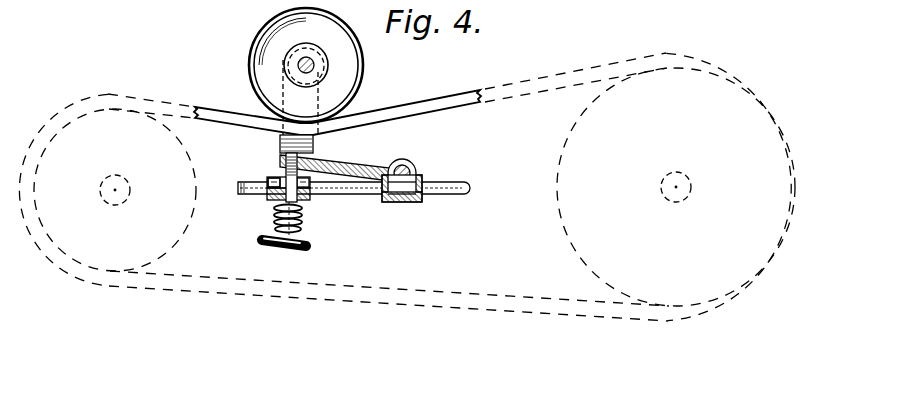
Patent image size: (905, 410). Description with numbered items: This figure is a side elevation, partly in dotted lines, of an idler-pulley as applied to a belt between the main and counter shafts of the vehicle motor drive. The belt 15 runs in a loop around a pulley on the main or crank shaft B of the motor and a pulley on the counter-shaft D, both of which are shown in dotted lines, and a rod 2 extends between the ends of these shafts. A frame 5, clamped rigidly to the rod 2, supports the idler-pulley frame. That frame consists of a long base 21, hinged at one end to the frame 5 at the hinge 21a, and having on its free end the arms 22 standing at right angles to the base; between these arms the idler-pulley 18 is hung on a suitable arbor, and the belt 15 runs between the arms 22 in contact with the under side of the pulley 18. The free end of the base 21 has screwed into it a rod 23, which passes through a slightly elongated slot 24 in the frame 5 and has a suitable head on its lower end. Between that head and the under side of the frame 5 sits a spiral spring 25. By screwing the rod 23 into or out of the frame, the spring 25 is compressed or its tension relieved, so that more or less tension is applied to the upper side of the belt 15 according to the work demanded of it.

The rod 2 is at (461, 194).
The frame 5 is at (270, 199).
The belt 15 is at (405, 187).
The idler-pulley 18 is at (252, 50).
The base 21 is at (370, 165).
The hinge 21a is at (416, 171).
The arm 22 is at (316, 143).
The rod 23 is at (284, 162).
The slot 24 is at (268, 182).
The spiral spring 25 is at (300, 212).
The counter-shaft D is at (104, 178).
The main or crank shaft B is at (691, 181).